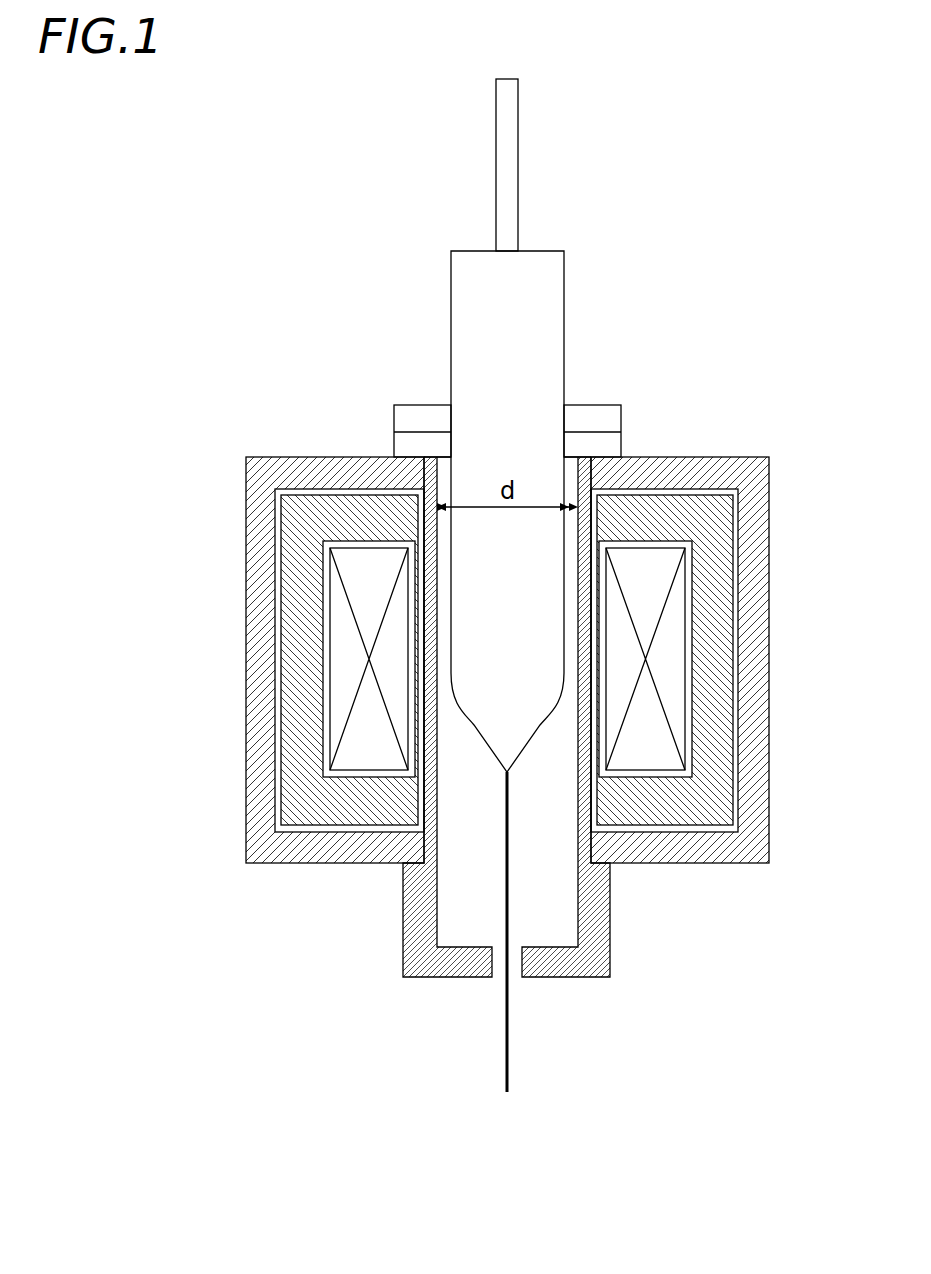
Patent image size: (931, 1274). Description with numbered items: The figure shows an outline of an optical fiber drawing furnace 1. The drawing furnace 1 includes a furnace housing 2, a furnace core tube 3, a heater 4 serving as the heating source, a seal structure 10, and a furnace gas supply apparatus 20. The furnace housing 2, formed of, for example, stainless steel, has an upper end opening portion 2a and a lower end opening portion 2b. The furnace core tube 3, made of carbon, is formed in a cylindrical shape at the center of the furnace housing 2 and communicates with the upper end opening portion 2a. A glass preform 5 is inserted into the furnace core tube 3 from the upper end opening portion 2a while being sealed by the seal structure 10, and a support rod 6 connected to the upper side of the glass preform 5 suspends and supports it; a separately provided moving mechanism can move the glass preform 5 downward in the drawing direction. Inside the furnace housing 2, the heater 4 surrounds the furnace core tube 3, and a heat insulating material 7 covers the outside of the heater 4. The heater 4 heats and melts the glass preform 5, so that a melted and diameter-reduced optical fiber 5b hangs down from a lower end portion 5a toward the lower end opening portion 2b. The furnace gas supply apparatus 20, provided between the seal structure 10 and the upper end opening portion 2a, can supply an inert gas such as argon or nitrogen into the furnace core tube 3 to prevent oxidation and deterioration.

The drawing furnace 1 is at (789, 886).
The furnace housing 2 is at (766, 586).
The upper end opening portion 2a is at (575, 476).
The lower end opening portion 2b is at (518, 978).
The furnace core tube 3 is at (580, 806).
The heater 4 is at (598, 744).
The glass preform 5 is at (552, 331).
The lower end portion 5a is at (483, 738).
The optical fiber 5b is at (505, 1023).
The support rod 6 is at (505, 163).
The heat insulating material 7 is at (720, 702).
The seal structure 10 is at (396, 412).
The furnace gas supply apparatus 20 is at (612, 441).